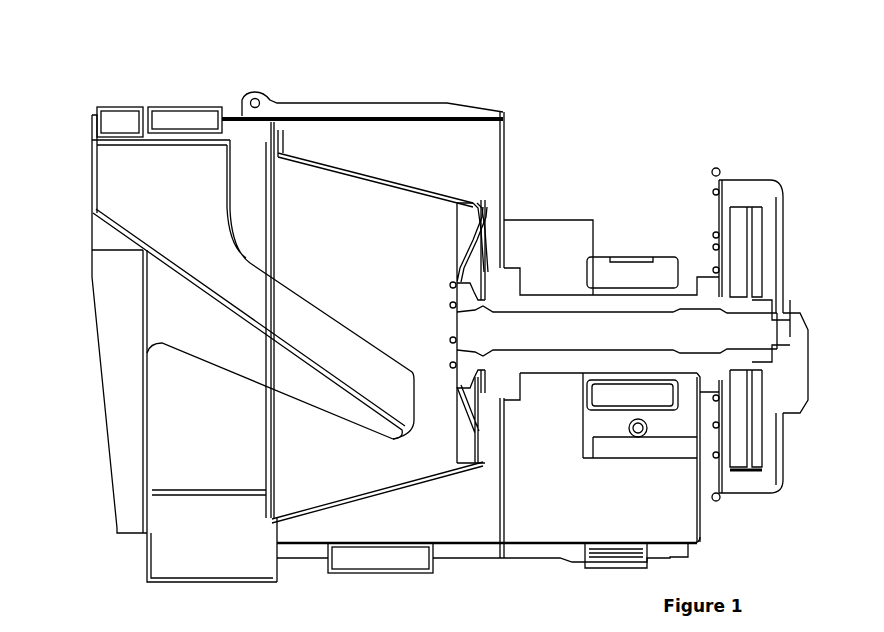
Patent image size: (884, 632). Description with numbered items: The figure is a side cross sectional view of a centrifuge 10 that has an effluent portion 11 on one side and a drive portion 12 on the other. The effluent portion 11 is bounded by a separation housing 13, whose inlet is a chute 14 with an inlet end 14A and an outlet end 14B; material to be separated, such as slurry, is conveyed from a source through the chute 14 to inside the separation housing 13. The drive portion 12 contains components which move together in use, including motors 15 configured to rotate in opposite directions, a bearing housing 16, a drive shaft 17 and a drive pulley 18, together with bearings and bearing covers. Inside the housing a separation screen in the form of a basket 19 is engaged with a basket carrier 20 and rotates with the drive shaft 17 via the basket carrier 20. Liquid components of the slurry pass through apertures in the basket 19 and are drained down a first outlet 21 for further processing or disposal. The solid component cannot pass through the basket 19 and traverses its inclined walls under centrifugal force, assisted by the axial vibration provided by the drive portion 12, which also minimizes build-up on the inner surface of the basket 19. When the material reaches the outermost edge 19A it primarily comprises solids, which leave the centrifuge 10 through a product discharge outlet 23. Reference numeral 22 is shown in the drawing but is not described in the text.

The centrifuge 10 is at (636, 31).
The effluent portion 11 is at (197, 73).
The drive portion 12 is at (748, 152).
The separation housing 13 is at (433, 115).
The chute 14 is at (165, 305).
The inlet end 14A is at (107, 168).
The outlet end 14B is at (403, 417).
The motors 15 is at (628, 250).
The bearing housing 16 is at (712, 297).
The drive shaft 17 is at (748, 338).
The drive pulley 18 is at (750, 447).
The basket 19 is at (320, 165).
The outermost edge 19A is at (271, 182).
The basket carrier 20 is at (472, 247).
The first outlet 21 is at (372, 573).
The bottom plate 22 is at (318, 505).
The product discharge outlet 23 is at (192, 573).